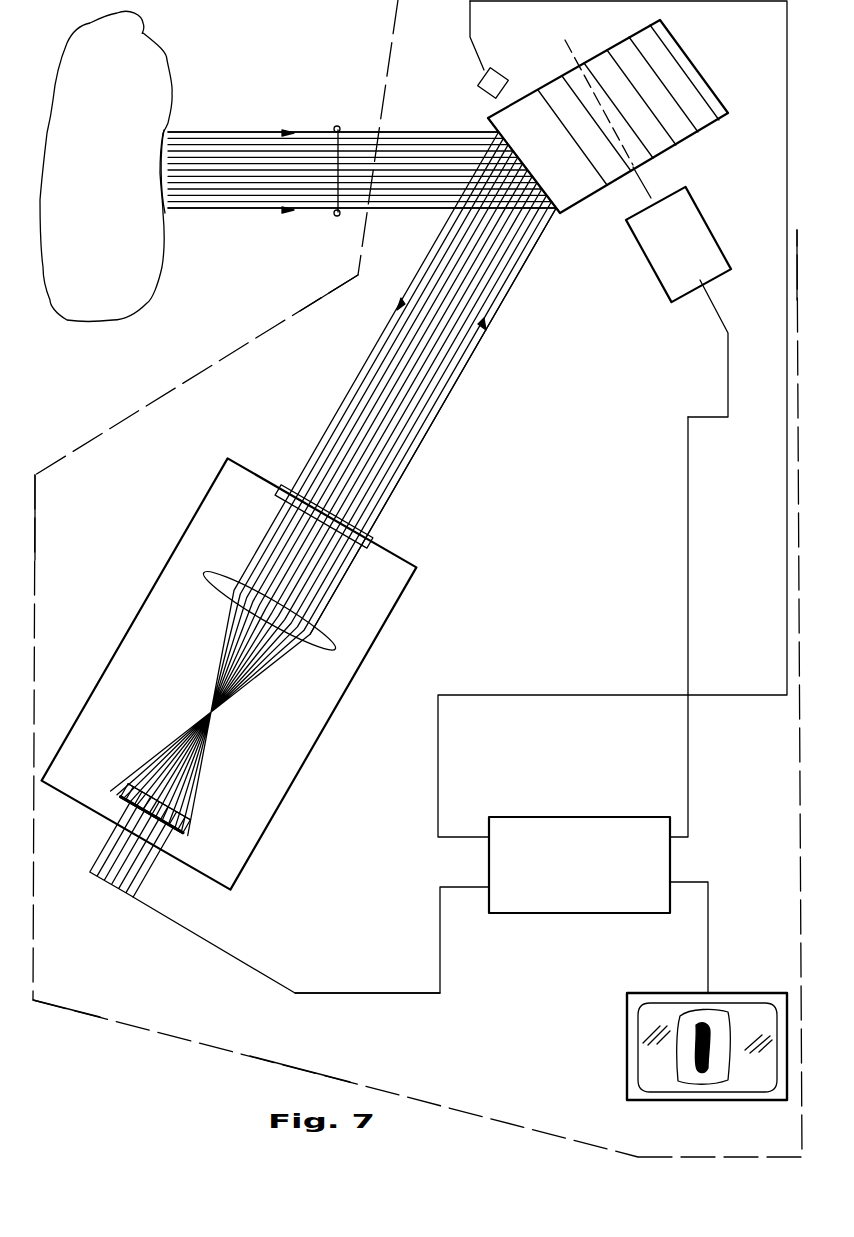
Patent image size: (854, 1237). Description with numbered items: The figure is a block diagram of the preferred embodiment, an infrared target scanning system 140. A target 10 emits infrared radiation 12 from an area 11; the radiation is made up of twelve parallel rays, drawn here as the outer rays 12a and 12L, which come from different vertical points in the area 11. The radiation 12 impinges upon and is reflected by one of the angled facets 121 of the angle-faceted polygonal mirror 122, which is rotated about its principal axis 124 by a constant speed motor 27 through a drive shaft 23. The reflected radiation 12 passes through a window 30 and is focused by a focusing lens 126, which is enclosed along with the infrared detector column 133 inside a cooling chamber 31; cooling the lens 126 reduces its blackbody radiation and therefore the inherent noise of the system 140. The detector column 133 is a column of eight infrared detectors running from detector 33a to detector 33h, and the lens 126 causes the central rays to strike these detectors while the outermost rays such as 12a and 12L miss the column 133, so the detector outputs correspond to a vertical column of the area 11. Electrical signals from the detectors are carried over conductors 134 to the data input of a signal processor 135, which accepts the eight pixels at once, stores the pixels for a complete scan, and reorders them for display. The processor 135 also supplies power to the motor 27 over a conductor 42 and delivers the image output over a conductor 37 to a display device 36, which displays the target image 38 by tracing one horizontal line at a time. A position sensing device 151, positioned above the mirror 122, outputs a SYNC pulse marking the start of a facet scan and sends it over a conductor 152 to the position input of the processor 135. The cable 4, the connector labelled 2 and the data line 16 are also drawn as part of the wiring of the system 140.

The target 10 is at (172, 46).
The area 11 is at (158, 167).
The infrared radiation 12 is at (338, 127).
The parallel ray 12L is at (244, 134).
The parallel ray 12a is at (240, 213).
The conductor 152 is at (468, 22).
The cable 4 is at (474, 47).
The position sensing device 151 is at (476, 96).
The principal axis 124 is at (565, 40).
The angle-faceted polygonal mirror 122 is at (522, 96).
The angled facet 121 is at (488, 120).
The drive shaft 23 is at (644, 184).
The constant speed motor 27 is at (748, 215).
The cable 2 is at (708, 315).
The conductor 42 is at (703, 417).
The window 30 is at (372, 532).
The cooling chamber 31 is at (405, 590).
The focusing lens 126 is at (228, 574).
The infrared detector column 133 is at (120, 800).
The infrared detector 33a is at (134, 784).
The infrared detector 33h is at (186, 820).
The data line 16 is at (211, 946).
The conductors 134 is at (380, 995).
The signal processor 135 is at (548, 816).
The conductor 37 is at (710, 915).
The display device 36 is at (752, 995).
The target image 38 is at (737, 1049).
The infrared target scanning system 140 is at (193, 1043).